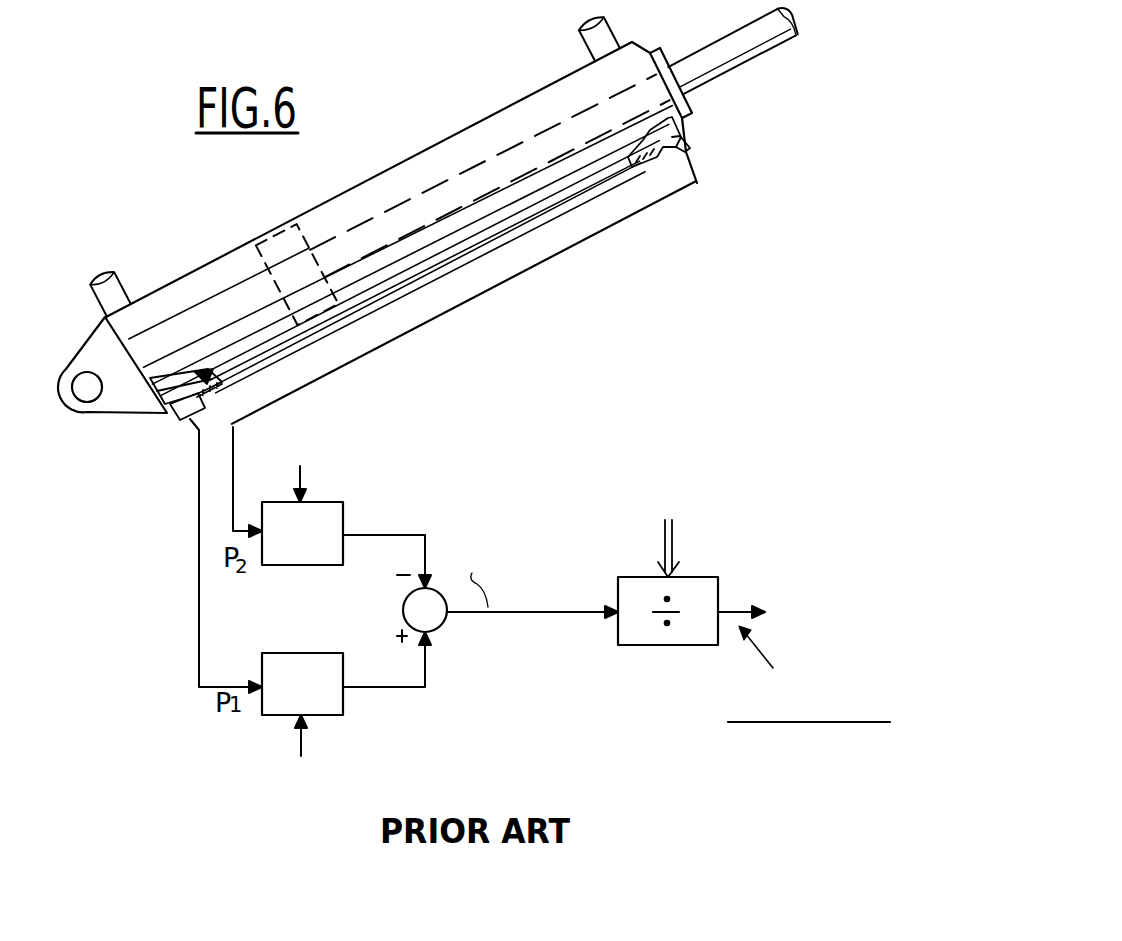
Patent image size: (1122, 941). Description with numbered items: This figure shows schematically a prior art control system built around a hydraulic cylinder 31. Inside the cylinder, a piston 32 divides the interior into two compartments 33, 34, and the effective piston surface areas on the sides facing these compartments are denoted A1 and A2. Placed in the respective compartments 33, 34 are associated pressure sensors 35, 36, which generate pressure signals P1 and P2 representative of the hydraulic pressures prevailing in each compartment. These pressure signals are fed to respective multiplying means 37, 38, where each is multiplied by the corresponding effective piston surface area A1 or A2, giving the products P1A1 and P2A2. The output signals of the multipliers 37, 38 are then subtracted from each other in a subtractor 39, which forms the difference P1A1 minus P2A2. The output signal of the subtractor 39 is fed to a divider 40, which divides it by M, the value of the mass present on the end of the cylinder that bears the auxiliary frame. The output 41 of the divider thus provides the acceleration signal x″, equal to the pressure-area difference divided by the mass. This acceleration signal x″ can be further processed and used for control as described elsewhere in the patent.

The hydraulic cylinder 31 is at (498, 100).
The piston 32 is at (296, 236).
The compartment 33 is at (416, 178).
The compartment 34 is at (200, 380).
The pressure sensor 35 is at (678, 150).
The pressure sensor 36 is at (178, 393).
The multiplying means 37 is at (323, 520).
The multiplying means 38 is at (326, 676).
The subtractor 39 is at (407, 611).
The divider 40 is at (660, 589).
The output 41 is at (730, 613).